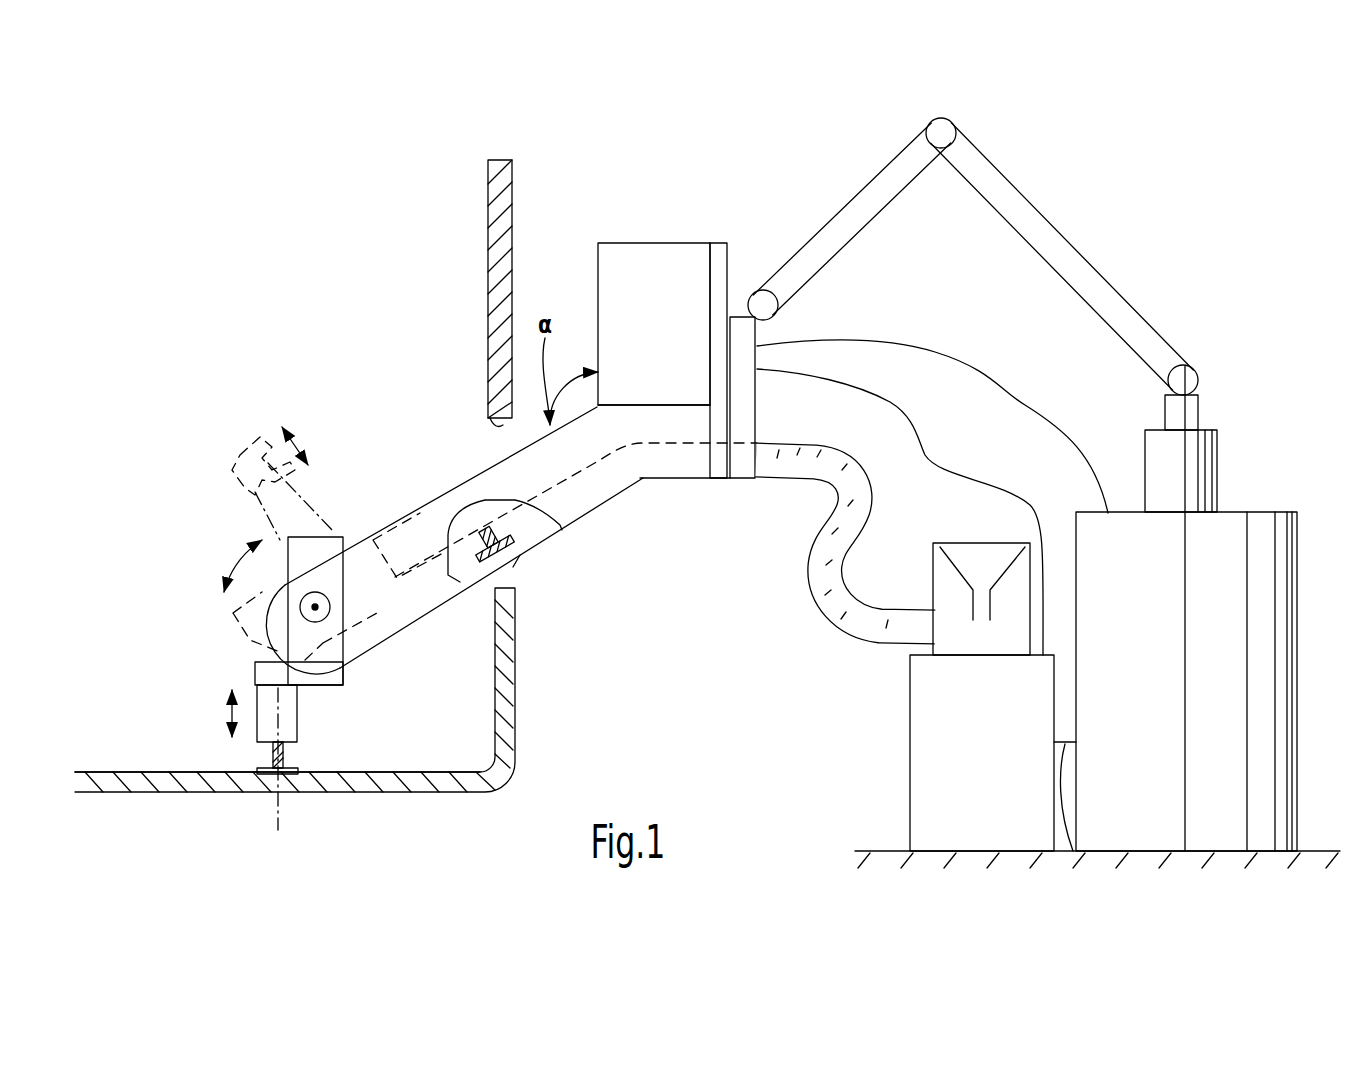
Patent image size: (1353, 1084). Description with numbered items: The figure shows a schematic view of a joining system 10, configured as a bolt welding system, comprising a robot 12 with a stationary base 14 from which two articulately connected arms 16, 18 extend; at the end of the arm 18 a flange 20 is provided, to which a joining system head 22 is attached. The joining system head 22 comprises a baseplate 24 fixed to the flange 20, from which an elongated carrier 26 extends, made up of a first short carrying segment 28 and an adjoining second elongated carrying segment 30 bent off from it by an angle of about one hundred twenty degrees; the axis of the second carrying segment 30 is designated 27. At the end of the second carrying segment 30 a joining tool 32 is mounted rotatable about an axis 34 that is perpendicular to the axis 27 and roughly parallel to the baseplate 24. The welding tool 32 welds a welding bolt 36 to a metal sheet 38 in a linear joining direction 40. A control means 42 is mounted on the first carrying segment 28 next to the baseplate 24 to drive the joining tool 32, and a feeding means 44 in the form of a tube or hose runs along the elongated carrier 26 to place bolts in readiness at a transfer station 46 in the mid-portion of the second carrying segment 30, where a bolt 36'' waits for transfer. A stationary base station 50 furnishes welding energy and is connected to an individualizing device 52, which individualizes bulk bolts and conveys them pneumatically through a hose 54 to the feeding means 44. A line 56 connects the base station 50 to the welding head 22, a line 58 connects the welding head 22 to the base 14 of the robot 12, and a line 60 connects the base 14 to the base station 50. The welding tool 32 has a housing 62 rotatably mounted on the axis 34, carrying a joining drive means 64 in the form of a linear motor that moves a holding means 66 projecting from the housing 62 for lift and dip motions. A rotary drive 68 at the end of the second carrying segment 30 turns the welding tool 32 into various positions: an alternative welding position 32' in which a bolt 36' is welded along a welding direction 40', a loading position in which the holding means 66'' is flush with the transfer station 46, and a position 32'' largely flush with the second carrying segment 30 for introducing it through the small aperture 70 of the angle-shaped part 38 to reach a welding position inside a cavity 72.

The joining system 10 is at (1120, 190).
The robot 12 is at (1222, 367).
The stationary base 14 is at (1222, 548).
The arm 16 is at (1103, 272).
The arm 18 is at (875, 197).
The flange 20 is at (743, 463).
The joining system head 22 is at (682, 193).
The baseplate 24 is at (738, 272).
The elongated carrier 26 is at (583, 514).
The axis of the second carrying segment 27 is at (597, 468).
The first carrying segment 28 is at (671, 423).
The second carrying segment 30 is at (498, 482).
The joining tool 32 is at (364, 706).
The welding tool in alternative welding position 32' is at (226, 557).
The welding tool position flush with second carrying segment 32'' is at (409, 595).
The axis of rotation 34 is at (323, 605).
The welding bolt 36 is at (320, 759).
The bolt in alternative welding position 36' is at (235, 441).
The bolt held in readiness at transfer station 36'' is at (489, 588).
The metal sheet 38 is at (318, 783).
The joining direction 40 is at (179, 699).
The welding direction in alternative position 40' is at (296, 409).
The control means 42 is at (634, 262).
The feeding means 44 is at (527, 528).
The transfer station 46 is at (513, 567).
The base station 50 is at (912, 755).
The individualizing device 52 is at (950, 597).
The hose 54 is at (825, 602).
The line 56 is at (888, 396).
The line 58 is at (940, 352).
The line 60 is at (1074, 853).
The housing 62 is at (338, 535).
The joining drive means 64 is at (235, 585).
The holding means 66 is at (232, 682).
The holding means in loading position 66'' is at (370, 537).
The rotary drive 68 is at (314, 622).
The aperture 70 is at (497, 428).
The cavity 72 is at (277, 540).